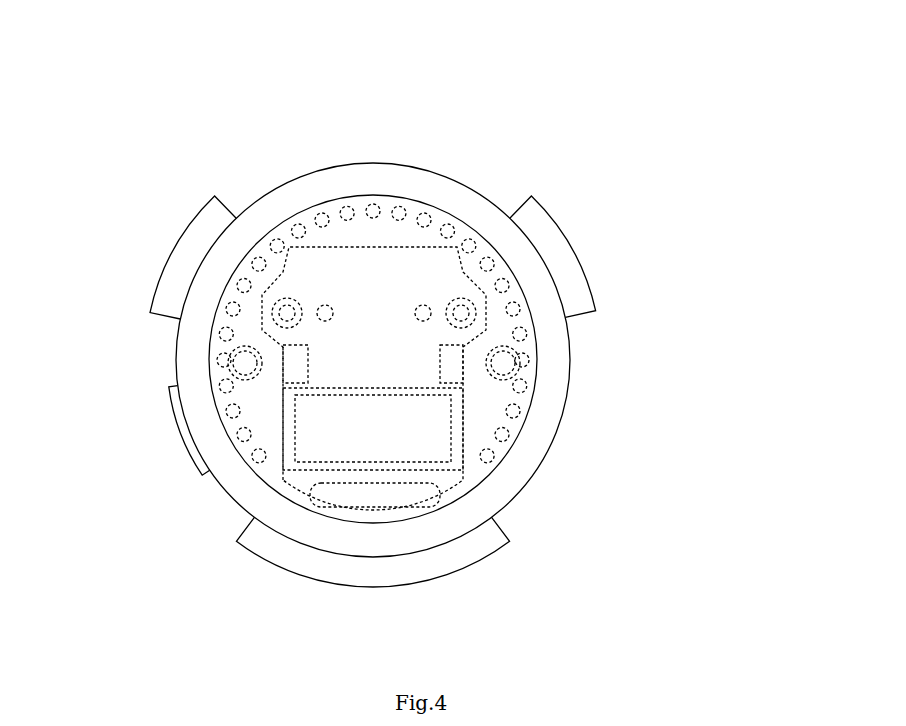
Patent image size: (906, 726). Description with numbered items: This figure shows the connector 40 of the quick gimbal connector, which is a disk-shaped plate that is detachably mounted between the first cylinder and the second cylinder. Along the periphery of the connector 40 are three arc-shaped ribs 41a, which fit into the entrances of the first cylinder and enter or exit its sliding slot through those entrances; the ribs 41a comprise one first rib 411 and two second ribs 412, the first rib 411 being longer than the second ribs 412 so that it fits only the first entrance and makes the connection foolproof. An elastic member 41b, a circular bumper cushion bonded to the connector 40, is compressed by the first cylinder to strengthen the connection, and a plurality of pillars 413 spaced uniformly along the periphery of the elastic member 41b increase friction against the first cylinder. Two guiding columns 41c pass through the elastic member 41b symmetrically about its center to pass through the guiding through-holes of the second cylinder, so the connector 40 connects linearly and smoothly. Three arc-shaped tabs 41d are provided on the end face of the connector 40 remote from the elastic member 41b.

The connector 40 is at (437, 112).
The rib 41a is at (529, 403).
The first rib 411 is at (470, 564).
The second rib 412 is at (573, 297).
The elastic member 41b is at (273, 277).
The guiding column 41c is at (250, 363).
The tab 41d is at (183, 431).
The pillar 413 is at (323, 223).